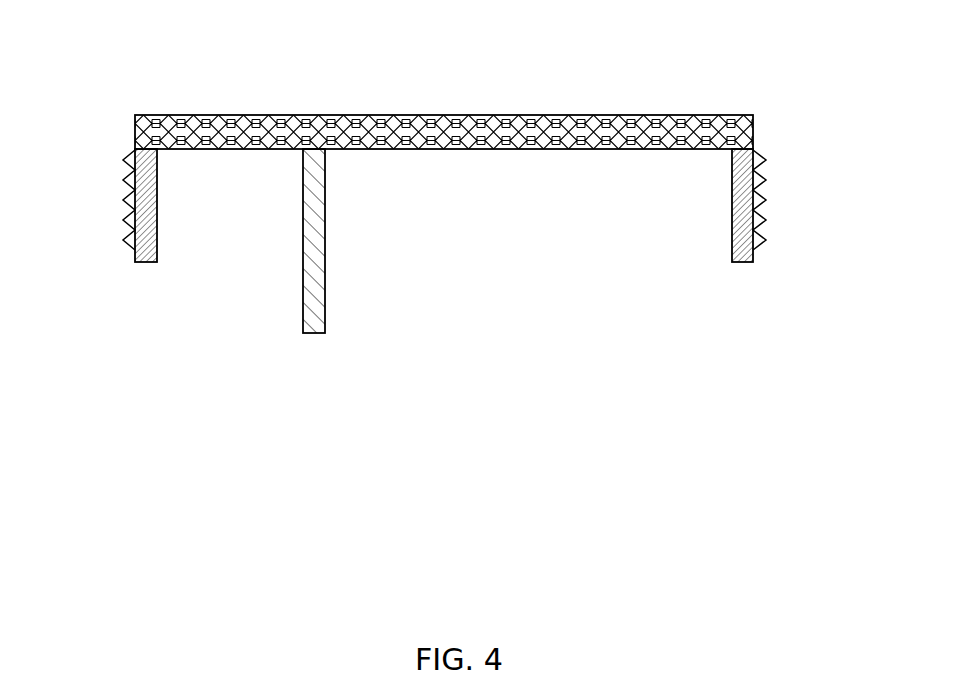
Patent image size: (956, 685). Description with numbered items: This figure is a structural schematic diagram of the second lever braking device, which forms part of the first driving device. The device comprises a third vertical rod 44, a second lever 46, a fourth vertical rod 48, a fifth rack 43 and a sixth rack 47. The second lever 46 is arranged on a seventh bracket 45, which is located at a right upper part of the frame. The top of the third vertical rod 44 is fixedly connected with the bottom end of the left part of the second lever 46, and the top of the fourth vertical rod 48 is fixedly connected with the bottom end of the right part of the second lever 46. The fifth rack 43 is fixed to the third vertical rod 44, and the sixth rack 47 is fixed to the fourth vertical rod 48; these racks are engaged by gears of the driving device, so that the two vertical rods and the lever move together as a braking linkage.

The fifth rack 43 is at (120, 183).
The third vertical rod 44 is at (134, 263).
The seventh bracket 45 is at (302, 335).
The second lever 46 is at (630, 115).
The sixth rack 47 is at (767, 185).
The fourth vertical rod 48 is at (757, 263).